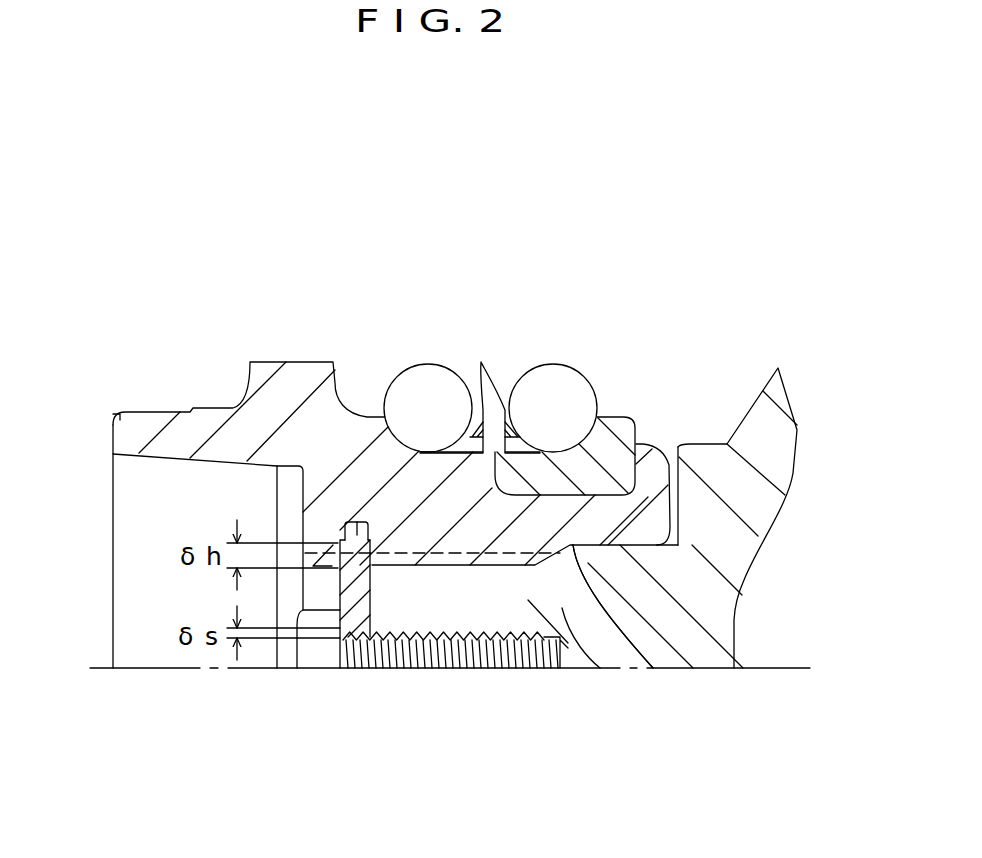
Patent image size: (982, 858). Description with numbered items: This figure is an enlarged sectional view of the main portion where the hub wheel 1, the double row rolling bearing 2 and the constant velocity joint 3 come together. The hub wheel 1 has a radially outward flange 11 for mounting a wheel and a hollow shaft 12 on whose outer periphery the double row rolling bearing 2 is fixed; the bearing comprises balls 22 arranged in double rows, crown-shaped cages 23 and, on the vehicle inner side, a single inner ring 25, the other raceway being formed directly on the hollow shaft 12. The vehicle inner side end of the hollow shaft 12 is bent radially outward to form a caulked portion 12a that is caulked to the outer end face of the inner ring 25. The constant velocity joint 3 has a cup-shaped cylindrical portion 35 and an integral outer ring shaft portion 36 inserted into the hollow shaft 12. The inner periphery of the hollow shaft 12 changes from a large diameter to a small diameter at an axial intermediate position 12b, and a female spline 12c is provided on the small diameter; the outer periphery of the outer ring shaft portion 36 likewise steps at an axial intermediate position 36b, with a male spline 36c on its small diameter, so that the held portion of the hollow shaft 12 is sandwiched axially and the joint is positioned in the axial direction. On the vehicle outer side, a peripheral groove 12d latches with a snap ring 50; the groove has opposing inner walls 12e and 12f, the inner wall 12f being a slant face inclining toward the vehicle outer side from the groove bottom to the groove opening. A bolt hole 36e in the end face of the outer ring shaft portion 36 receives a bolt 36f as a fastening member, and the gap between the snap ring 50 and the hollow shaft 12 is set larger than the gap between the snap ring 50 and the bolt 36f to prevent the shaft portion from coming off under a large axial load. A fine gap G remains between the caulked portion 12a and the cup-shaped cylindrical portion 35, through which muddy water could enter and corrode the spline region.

The hub wheel 1 is at (110, 624).
The double row rolling bearing 2 is at (543, 343).
The constant velocity joint 3 is at (797, 467).
The radially outward flange 11 is at (257, 373).
The hollow shaft 12 is at (310, 487).
The caulked portion 12a is at (643, 460).
The axial intermediate position of the hollow shaft inner periphery 12b is at (653, 668).
The female spline 12c is at (455, 558).
The peripheral groove 12d is at (355, 522).
The inner wall in the vehicle inner side 12e is at (372, 524).
The inner wall in the vehicle outer side 12f is at (340, 528).
The balls 22 is at (410, 383).
The crown-shaped cages 23 is at (491, 364).
The inner ring 25 is at (610, 427).
The cup-shaped cylindrical portion 35 is at (767, 427).
The outer ring shaft portion 36 is at (598, 668).
The axial intermediate position of the outer ring shaft portion 36b is at (653, 668).
The male spline 36c is at (455, 558).
The bolt hole 36e is at (552, 662).
The bolt 36f is at (315, 662).
The snap ring 50 is at (350, 665).
The fine gap G is at (673, 452).